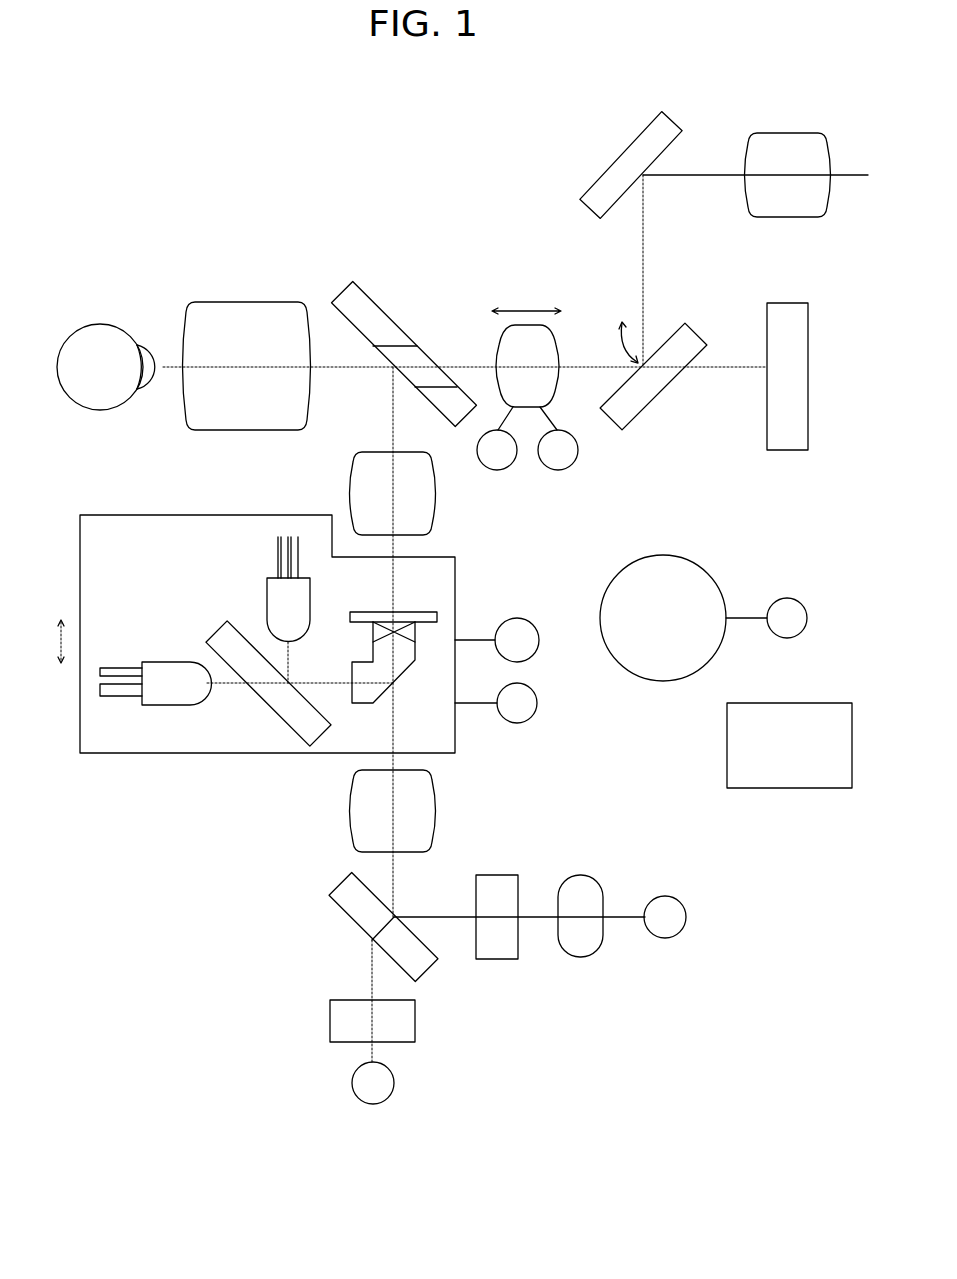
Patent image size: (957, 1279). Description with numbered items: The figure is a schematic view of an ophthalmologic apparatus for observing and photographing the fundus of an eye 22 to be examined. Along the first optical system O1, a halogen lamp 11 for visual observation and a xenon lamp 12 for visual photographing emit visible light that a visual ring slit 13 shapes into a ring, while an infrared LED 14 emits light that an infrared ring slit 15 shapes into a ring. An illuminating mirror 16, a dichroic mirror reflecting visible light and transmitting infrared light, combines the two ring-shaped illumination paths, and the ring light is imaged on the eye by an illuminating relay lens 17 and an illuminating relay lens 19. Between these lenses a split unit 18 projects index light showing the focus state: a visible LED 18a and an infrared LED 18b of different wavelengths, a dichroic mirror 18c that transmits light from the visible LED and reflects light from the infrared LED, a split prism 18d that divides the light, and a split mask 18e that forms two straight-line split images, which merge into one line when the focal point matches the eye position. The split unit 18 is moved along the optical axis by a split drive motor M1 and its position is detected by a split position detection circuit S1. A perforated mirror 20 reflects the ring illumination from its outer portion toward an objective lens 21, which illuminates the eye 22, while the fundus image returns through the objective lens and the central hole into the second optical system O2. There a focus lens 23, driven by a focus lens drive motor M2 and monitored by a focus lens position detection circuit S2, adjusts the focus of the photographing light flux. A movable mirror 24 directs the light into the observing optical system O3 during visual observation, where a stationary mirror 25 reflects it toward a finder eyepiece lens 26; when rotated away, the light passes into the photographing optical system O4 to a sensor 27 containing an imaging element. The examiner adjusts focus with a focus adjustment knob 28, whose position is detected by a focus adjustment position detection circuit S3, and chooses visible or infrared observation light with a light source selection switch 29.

The halogen lamp 11 is at (667, 940).
The xenon lamp 12 is at (583, 958).
The visual ring slit 13 is at (500, 960).
The infrared light-emitting diode 14 is at (352, 1085).
The infrared ring slit 15 is at (330, 1020).
The illuminating mirror 16 is at (332, 912).
The illuminating relay lens 17 is at (350, 815).
The split unit 18 is at (458, 742).
The visible LED 18a is at (165, 662).
The infrared LED 18b is at (265, 598).
The dichroic mirror 18c is at (220, 625).
The split prism 18d is at (395, 688).
The split mask 18e is at (383, 610).
The illuminating relay lens 19 is at (350, 492).
The perforated mirror 20 is at (377, 300).
The objective lens 21 is at (248, 301).
The eye to be examined 22 is at (100, 322).
The focus lens 23 is at (525, 308).
The movable mirror 24 is at (667, 385).
The stationary mirror 25 is at (613, 157).
The finder eyepiece lens 26 is at (786, 134).
The sensor 27 is at (790, 452).
The focus adjustment knob 28 is at (663, 682).
The light source selection switch 29 is at (790, 788).
The split drive motor M1 is at (497, 640).
The focus lens drive motor M2 is at (497, 438).
The split position detection circuit S1 is at (496, 703).
The focus lens position detection circuit S2 is at (558, 438).
The focus adjustment position detection circuit S3 is at (766, 618).
The first optical system O1 is at (393, 903).
The second optical system O2 is at (459, 367).
The observing optical system O3 is at (643, 262).
The photographing optical system O4 is at (727, 370).